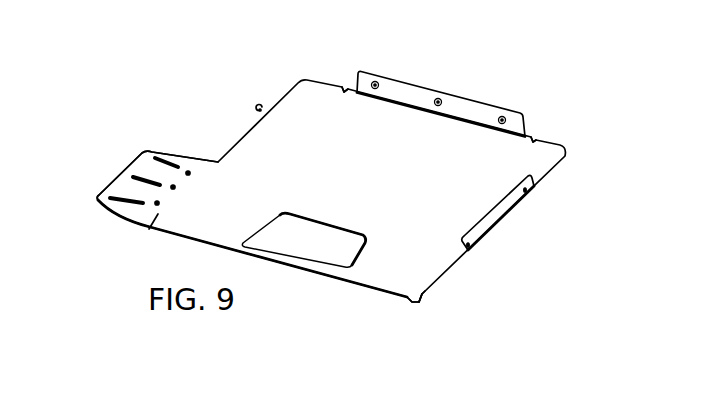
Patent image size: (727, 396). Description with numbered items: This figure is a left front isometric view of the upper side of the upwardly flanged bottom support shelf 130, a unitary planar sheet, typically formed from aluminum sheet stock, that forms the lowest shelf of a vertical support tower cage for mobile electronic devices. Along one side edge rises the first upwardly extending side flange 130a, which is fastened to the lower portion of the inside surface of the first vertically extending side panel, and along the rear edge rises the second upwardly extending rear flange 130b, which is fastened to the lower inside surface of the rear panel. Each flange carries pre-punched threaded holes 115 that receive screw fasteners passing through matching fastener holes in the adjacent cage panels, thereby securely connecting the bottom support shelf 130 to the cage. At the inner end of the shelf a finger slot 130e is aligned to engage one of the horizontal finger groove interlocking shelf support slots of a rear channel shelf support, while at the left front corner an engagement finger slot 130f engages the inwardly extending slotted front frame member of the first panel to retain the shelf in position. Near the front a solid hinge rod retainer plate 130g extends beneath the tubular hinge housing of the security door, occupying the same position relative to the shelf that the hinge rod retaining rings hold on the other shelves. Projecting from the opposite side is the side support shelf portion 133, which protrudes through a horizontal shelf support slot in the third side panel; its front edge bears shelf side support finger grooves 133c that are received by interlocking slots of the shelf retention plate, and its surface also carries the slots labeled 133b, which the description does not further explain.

The bottom support shelf 130 is at (237, 126).
The first upwardly extending side flange 130a is at (482, 218).
The second upwardly extending rear flange 130b is at (478, 101).
The finger slot 130e is at (530, 141).
The left front engagement finger slot 130f is at (426, 296).
The hinge rod retainer plate 130g is at (417, 303).
The threaded holes 115 is at (438, 98).
The side support shelf portion 133 is at (108, 183).
The slots 133b is at (140, 177).
The shelf side support finger grooves 133c is at (149, 226).